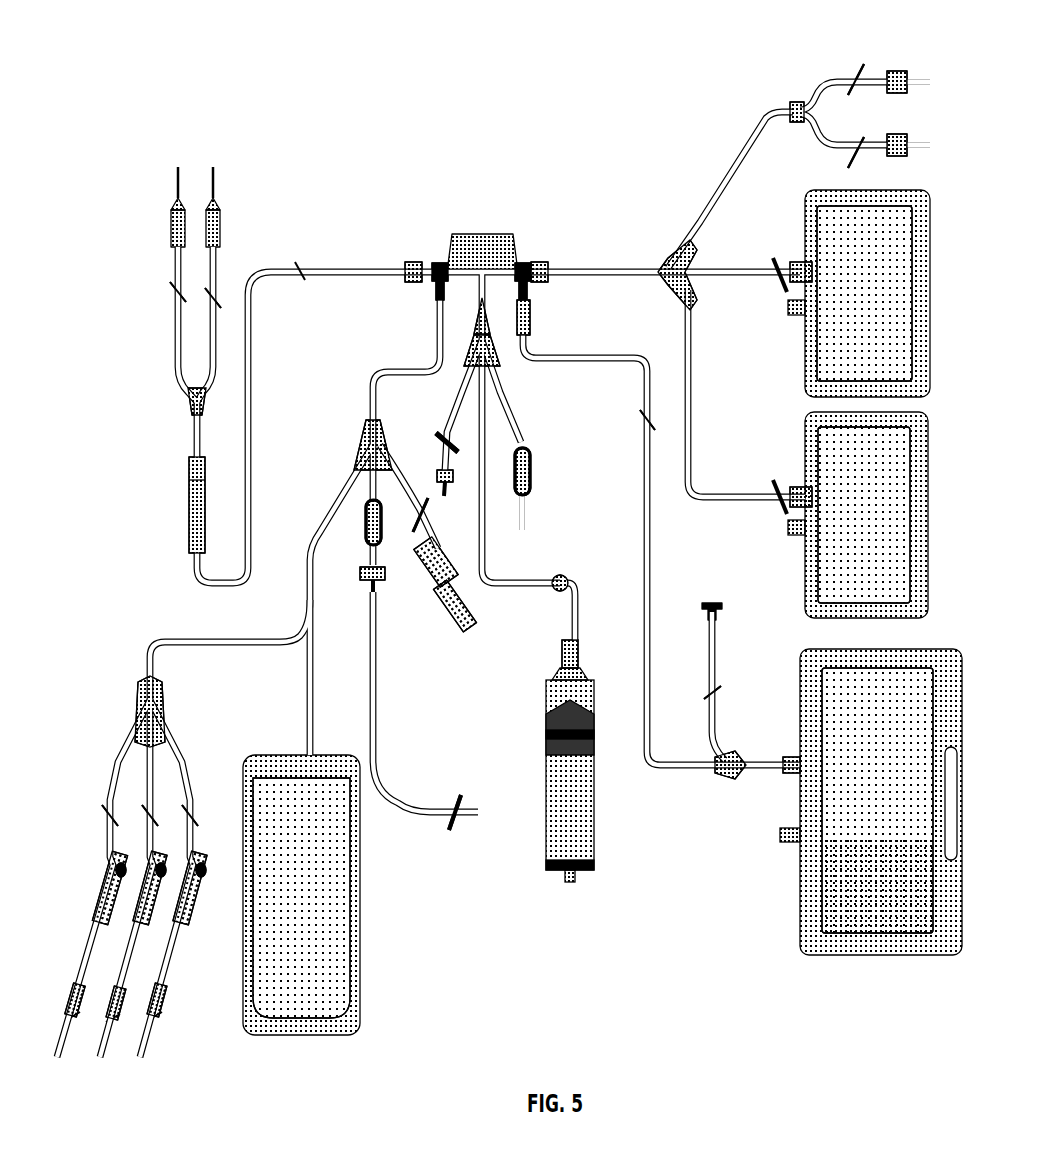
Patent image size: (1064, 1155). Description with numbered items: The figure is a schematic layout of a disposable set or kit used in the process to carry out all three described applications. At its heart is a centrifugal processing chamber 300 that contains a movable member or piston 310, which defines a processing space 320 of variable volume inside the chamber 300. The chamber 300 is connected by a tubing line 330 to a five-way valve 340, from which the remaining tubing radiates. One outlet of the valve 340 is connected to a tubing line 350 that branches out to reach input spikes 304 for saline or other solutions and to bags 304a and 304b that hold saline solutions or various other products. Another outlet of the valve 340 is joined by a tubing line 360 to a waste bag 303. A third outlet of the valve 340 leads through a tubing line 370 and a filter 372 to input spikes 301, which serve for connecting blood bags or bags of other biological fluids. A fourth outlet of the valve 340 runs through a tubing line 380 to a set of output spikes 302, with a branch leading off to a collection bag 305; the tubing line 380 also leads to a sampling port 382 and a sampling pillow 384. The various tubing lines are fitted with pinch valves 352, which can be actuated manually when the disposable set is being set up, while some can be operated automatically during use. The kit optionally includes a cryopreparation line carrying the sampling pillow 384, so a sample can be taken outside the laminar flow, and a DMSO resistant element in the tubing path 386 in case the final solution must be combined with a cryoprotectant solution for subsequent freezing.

The centrifugal processing chamber 300 is at (546, 815).
The input spikes 301 is at (173, 275).
The output spikes 302 is at (95, 950).
The waste bag 303 is at (857, 910).
The input spikes 304 is at (818, 80).
The bag 304a is at (859, 293).
The bag 304b is at (858, 515).
The collection bag 305 is at (350, 955).
The movable member or piston 310 is at (590, 735).
The processing space 320 is at (548, 701).
The tubing line 330 is at (540, 580).
The 5-way valve 340 is at (487, 233).
The tubing line 350 is at (606, 265).
The pinch valves 352 is at (300, 262).
The tubing line 360 is at (598, 370).
The tubing line 370 is at (363, 265).
The filter 372 is at (192, 514).
The tubing line 380 is at (420, 368).
The sampling port 382 is at (397, 494).
The sampling pillow 384 is at (445, 590).
The tubing path 386 is at (373, 692).